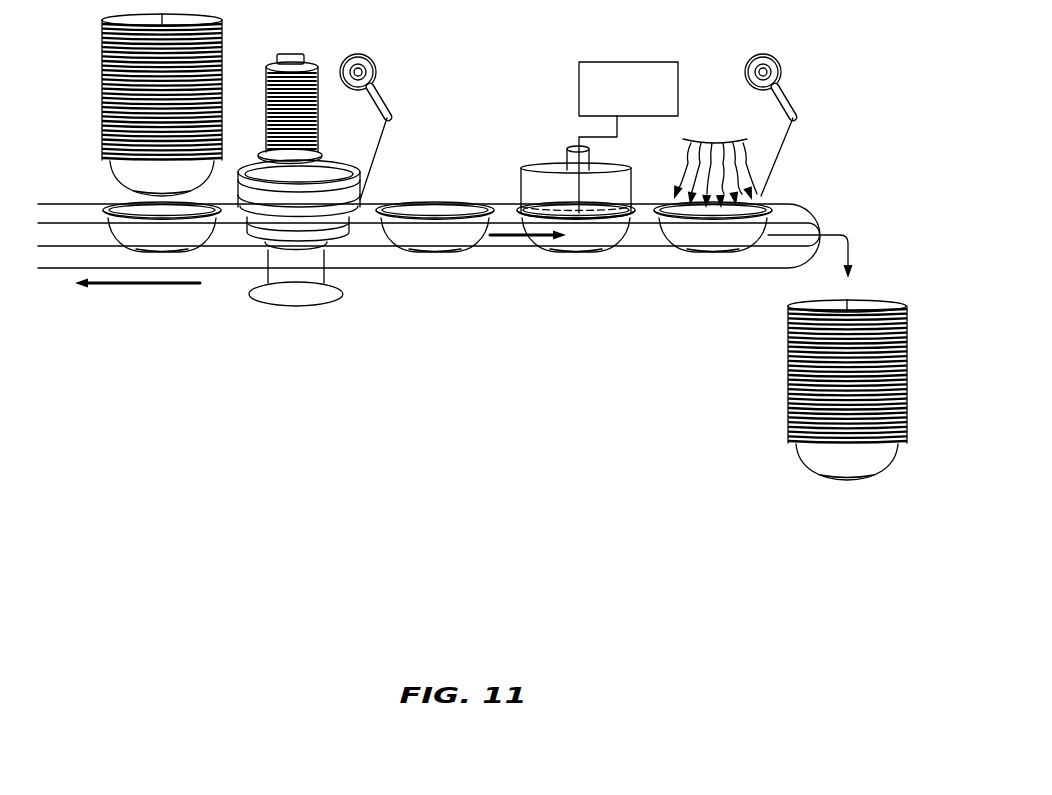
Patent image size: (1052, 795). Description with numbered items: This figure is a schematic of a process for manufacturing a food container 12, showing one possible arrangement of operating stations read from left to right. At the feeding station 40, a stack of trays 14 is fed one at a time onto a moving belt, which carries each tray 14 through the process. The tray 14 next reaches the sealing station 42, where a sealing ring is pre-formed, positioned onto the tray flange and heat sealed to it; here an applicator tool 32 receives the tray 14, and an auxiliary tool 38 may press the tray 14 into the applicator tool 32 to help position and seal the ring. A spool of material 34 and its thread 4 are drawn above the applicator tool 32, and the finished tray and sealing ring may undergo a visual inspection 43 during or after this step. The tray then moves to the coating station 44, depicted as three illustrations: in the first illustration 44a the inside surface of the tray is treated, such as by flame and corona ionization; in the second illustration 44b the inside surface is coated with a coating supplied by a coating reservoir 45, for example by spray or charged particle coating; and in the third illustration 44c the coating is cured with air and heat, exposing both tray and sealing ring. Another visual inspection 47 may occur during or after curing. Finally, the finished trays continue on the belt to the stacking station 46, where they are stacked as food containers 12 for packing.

The thread 4 is at (275, 96).
The food container 12 is at (910, 307).
The tray 14 is at (112, 233).
The applicator tool 32 is at (322, 168).
The thread spool 34 is at (292, 55).
The auxiliary tool 38 is at (254, 258).
The feeding station 40 is at (161, 300).
The sealing station 42 is at (293, 318).
The visual inspection 43 is at (365, 56).
The coating station 44 is at (574, 270).
The first illustration 44a is at (436, 283).
The second illustration 44b is at (574, 283).
The third illustration 44c is at (713, 244).
The coating reservoir 45 is at (636, 62).
The stacking station 46 is at (848, 510).
The visual inspection 47 is at (783, 103).